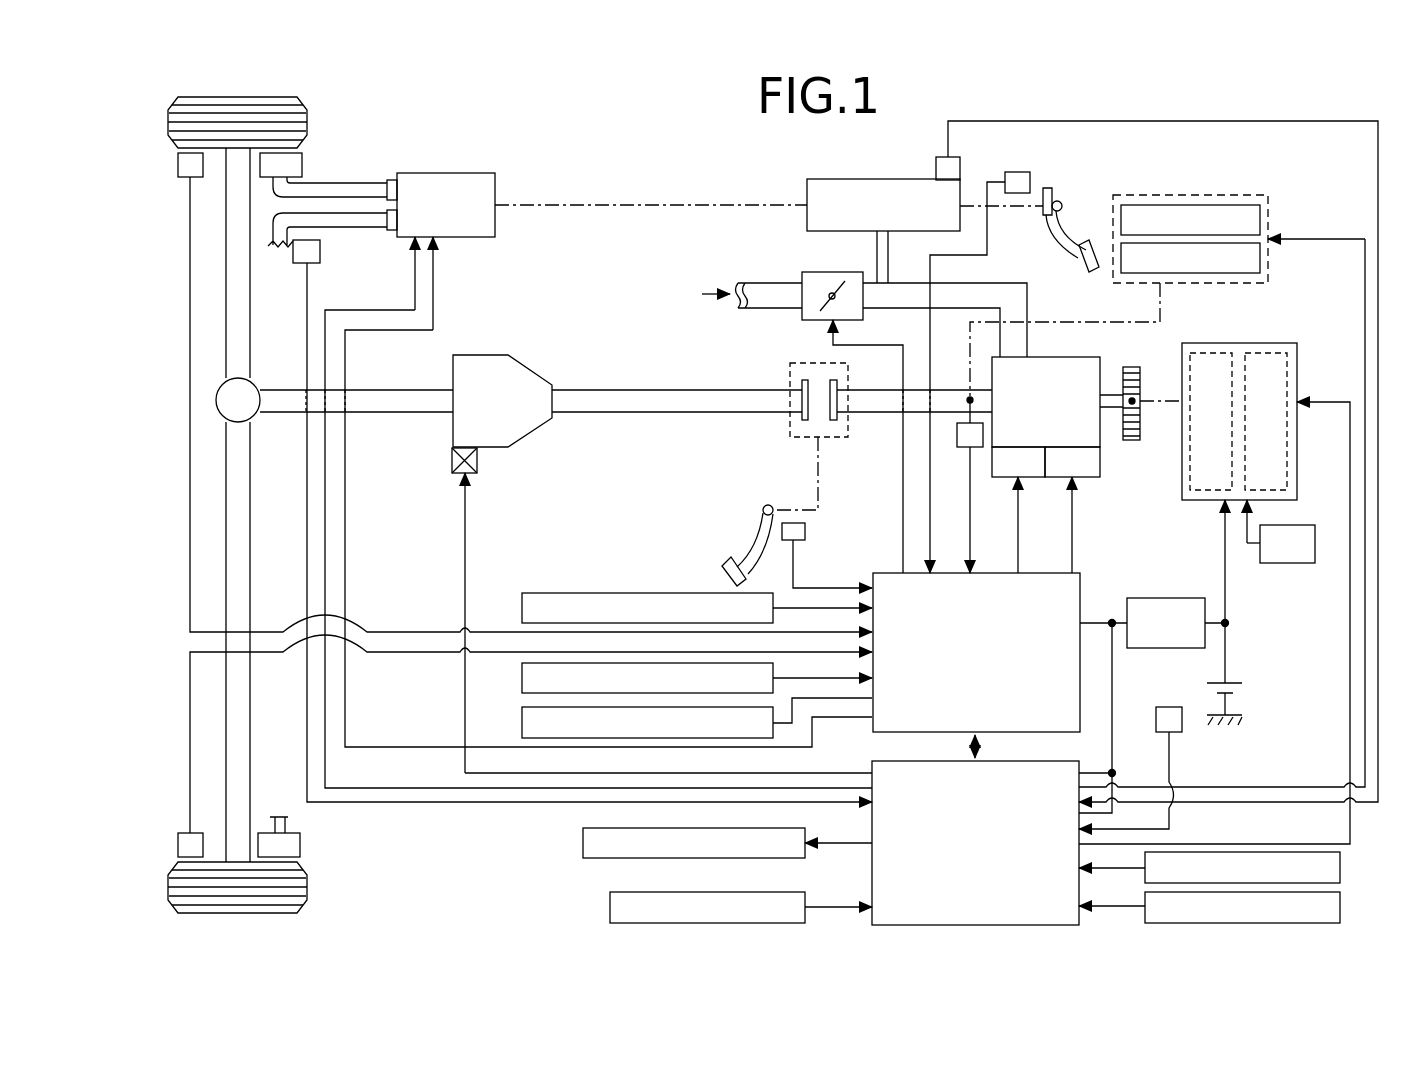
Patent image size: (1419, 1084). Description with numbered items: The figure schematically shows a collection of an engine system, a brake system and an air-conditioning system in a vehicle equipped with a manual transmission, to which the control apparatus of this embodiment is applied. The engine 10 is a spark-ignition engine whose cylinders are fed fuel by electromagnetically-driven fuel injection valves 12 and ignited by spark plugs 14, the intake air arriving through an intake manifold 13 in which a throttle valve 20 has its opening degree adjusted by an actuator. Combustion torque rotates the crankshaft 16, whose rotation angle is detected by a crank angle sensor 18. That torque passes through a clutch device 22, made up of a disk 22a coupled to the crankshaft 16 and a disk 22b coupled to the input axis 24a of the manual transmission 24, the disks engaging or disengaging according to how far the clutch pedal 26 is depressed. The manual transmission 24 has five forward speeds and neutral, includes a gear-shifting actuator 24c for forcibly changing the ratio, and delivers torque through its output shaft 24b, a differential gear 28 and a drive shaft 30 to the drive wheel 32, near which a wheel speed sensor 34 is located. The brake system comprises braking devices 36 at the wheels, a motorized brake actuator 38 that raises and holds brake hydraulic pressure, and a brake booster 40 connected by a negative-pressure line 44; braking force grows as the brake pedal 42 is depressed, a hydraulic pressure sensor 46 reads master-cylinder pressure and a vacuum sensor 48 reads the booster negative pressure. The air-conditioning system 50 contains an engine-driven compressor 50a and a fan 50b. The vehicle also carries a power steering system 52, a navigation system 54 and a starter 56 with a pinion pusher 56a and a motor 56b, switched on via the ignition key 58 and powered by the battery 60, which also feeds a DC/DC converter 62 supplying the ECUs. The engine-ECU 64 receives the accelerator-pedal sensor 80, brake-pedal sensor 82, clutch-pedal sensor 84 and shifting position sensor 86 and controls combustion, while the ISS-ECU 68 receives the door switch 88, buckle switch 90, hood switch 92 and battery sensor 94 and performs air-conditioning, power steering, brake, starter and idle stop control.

The engine 10 is at (1100, 368).
The fuel injection valve 12 is at (1028, 480).
The intake manifold 13 is at (762, 310).
The spark plug 14 is at (1088, 480).
The crankshaft 16 is at (878, 388).
The crank angle sensor 18 is at (957, 440).
The throttle valve 20 is at (812, 272).
The clutch device 22 is at (790, 378).
The disk 22a is at (833, 420).
The disk 22b is at (806, 420).
The manual transmission 24 is at (485, 355).
The input axis 24a is at (700, 388).
The output shaft 24b is at (390, 388).
The gear-shifting actuator 24c is at (452, 460).
The clutch pedal 26 is at (760, 522).
The differential gear 28 is at (222, 386).
The drive shaft 30 is at (250, 316).
The drive wheel 32 is at (307, 116).
The wheel speed sensor 34 is at (178, 165).
The braking device 36 is at (302, 163).
The brake actuator 38 is at (488, 173).
The brake booster 40 is at (807, 192).
The brake pedal 42 is at (1063, 201).
The negative pressure pipe 44 is at (877, 258).
The hydraulic pressure sensor 46 is at (320, 250).
The vacuum sensor 48 is at (936, 165).
The air-conditioning system 50 is at (1235, 195).
The compressor 50a is at (1260, 258).
The fan 50b is at (1260, 218).
The power steering system 52 is at (583, 844).
The navigation system 54 is at (522, 722).
The starter 56 is at (1297, 362).
The pinion pusher 56a is at (1200, 353).
The motor 56b is at (1273, 353).
The ignition key 58 is at (1288, 563).
The battery 60 is at (1242, 680).
The DC/DC converter 62 is at (1165, 648).
The engine-ECU 64 is at (1080, 580).
The ISS-ECU 68 is at (872, 864).
The accelerator-pedal sensor 80 is at (522, 607).
The brake-pedal sensor 82 is at (1018, 172).
The clutch-pedal sensor 84 is at (805, 530).
The shifting position sensor 86 is at (522, 677).
The door switch 88 is at (610, 908).
The buckle switch 90 is at (1340, 866).
The hood switch 92 is at (1340, 905).
The battery sensor 94 is at (1156, 719).